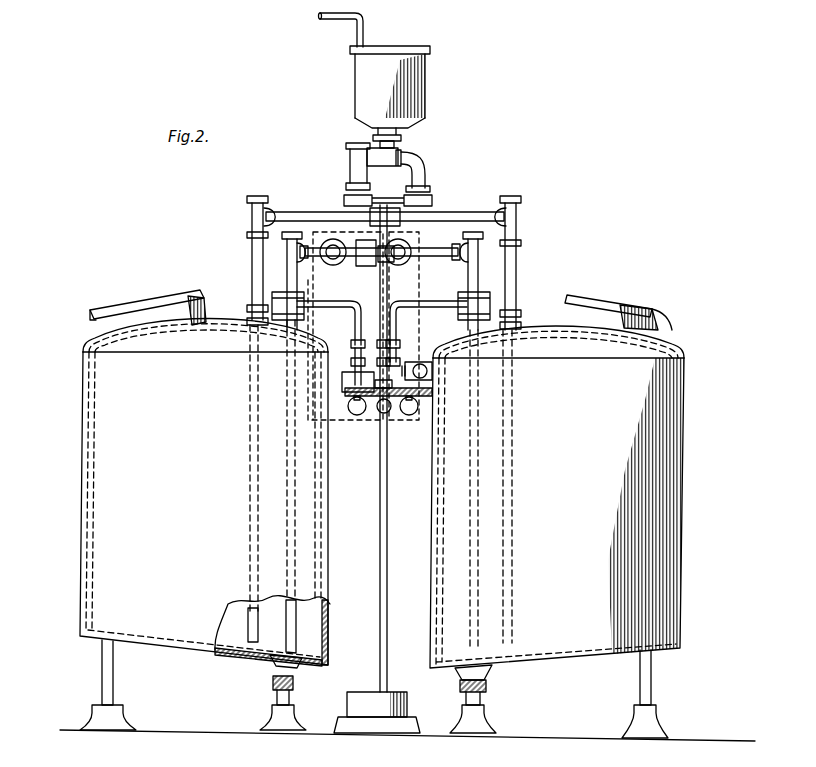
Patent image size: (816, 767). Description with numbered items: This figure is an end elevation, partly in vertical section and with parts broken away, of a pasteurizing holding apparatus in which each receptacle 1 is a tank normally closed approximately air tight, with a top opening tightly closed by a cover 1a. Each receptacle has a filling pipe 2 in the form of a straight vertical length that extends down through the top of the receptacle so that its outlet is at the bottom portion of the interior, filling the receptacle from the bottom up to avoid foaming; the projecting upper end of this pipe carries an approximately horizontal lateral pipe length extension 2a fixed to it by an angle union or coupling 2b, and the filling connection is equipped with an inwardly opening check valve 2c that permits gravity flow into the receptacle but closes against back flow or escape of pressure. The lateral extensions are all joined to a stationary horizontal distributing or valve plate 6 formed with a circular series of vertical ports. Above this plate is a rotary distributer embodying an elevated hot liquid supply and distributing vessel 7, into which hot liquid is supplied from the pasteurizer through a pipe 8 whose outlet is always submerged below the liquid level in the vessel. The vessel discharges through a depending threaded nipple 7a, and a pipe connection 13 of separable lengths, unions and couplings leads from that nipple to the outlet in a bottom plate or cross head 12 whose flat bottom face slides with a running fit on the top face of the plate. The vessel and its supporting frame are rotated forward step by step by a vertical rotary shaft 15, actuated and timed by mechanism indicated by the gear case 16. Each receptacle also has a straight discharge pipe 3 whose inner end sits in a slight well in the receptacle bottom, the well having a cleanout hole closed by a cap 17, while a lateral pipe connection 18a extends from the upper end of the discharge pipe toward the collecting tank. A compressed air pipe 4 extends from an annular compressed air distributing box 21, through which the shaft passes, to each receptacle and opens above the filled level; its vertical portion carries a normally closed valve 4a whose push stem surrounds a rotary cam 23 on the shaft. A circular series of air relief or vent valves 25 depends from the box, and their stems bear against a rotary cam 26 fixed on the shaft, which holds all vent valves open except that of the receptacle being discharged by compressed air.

The receptacle 1 is at (102, 562).
The cover 1a is at (632, 312).
The filling pipe 2 is at (252, 270).
The lateral pipe length extension 2a is at (305, 214).
The angle union or coupling 2b is at (533, 212).
The inwardly opening check valve 2c is at (507, 183).
The discharge pipe 3 is at (298, 281).
The compressed air pipe 4 is at (335, 307).
The valve 4a is at (418, 362).
The distributing or valve plate 6 is at (433, 200).
The hot liquid supply and distributing vessel 7 is at (427, 83).
The nipple 7a is at (420, 126).
The pipe 8 is at (358, 30).
The cross head 12 is at (406, 170).
The pipe connection 13 is at (350, 163).
The vertical rotary shaft 15 is at (393, 278).
The gear case 16 is at (390, 692).
The cap 17 is at (272, 682).
The lateral pipe connection 18a is at (420, 250).
The compressed air distributing box 21 is at (348, 378).
The rotary cam 23 is at (372, 332).
The air relief or vent valve 25 is at (400, 420).
The rotary cam 26 is at (367, 420).